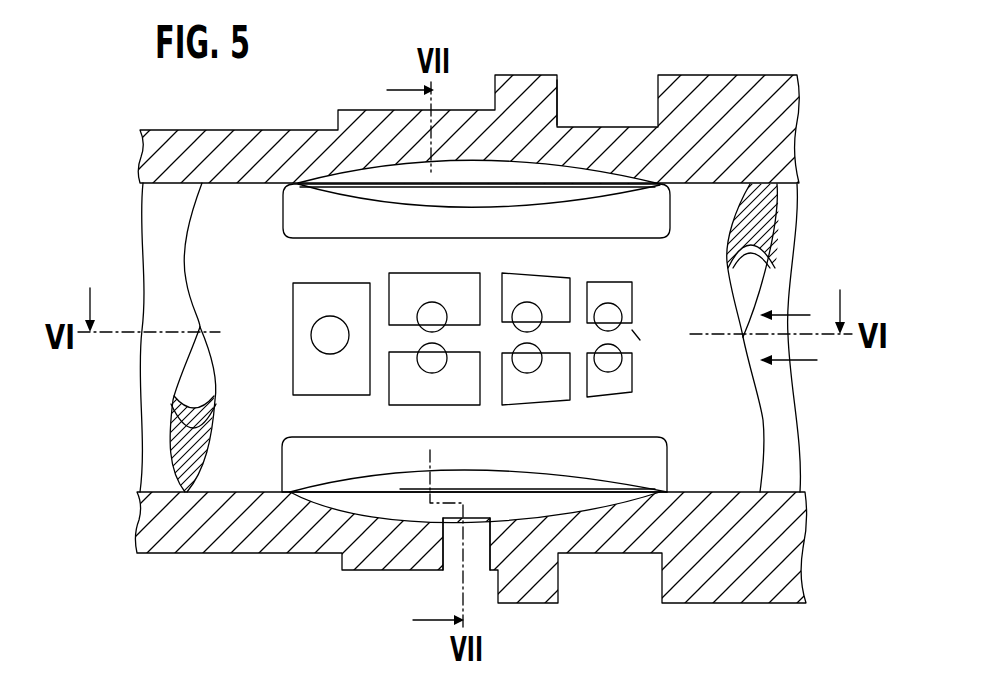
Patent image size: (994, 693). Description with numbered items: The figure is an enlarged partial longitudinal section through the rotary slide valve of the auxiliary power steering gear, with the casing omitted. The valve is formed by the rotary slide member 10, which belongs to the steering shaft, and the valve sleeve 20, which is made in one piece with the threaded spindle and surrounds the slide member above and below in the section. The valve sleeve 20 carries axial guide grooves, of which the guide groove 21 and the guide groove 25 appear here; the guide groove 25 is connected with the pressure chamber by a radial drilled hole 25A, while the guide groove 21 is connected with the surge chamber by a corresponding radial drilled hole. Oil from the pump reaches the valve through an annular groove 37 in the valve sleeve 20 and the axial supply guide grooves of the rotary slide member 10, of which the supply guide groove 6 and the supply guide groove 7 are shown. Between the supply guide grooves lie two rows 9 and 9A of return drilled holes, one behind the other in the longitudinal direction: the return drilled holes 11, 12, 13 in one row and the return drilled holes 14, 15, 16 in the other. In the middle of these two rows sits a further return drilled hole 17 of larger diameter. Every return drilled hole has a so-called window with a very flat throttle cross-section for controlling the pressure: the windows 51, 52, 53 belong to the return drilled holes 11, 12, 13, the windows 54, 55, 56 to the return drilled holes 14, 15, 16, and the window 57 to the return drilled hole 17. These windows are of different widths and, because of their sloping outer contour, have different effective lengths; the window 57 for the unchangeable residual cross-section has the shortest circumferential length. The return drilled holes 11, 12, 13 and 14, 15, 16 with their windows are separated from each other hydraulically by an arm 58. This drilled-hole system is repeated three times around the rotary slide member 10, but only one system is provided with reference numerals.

The valve sleeve 20 is at (748, 133).
The rotary slide member 10 is at (245, 213).
The axial guide groove 21 is at (462, 175).
The supply guide groove 6 is at (638, 212).
The annular groove 37 is at (557, 100).
The supply guide groove 7 is at (640, 459).
The axial guide groove 25 is at (530, 500).
The radial drilled hole 25A is at (477, 543).
The row of return drilled holes 9 is at (793, 316).
The row of return drilled holes 9A is at (803, 362).
The window 57 is at (320, 368).
The return drilled hole 17 is at (330, 338).
The window 51 is at (470, 290).
The window 52 is at (550, 295).
The window 53 is at (627, 302).
The window 54 is at (440, 390).
The window 55 is at (558, 383).
The window 56 is at (608, 385).
The arm 58 is at (625, 337).
The return drilled hole 11 is at (430, 318).
The return drilled hole 12 is at (526, 314).
The return drilled hole 13 is at (607, 315).
The return drilled hole 14 is at (428, 362).
The return drilled hole 15 is at (524, 365).
The return drilled hole 16 is at (610, 355).